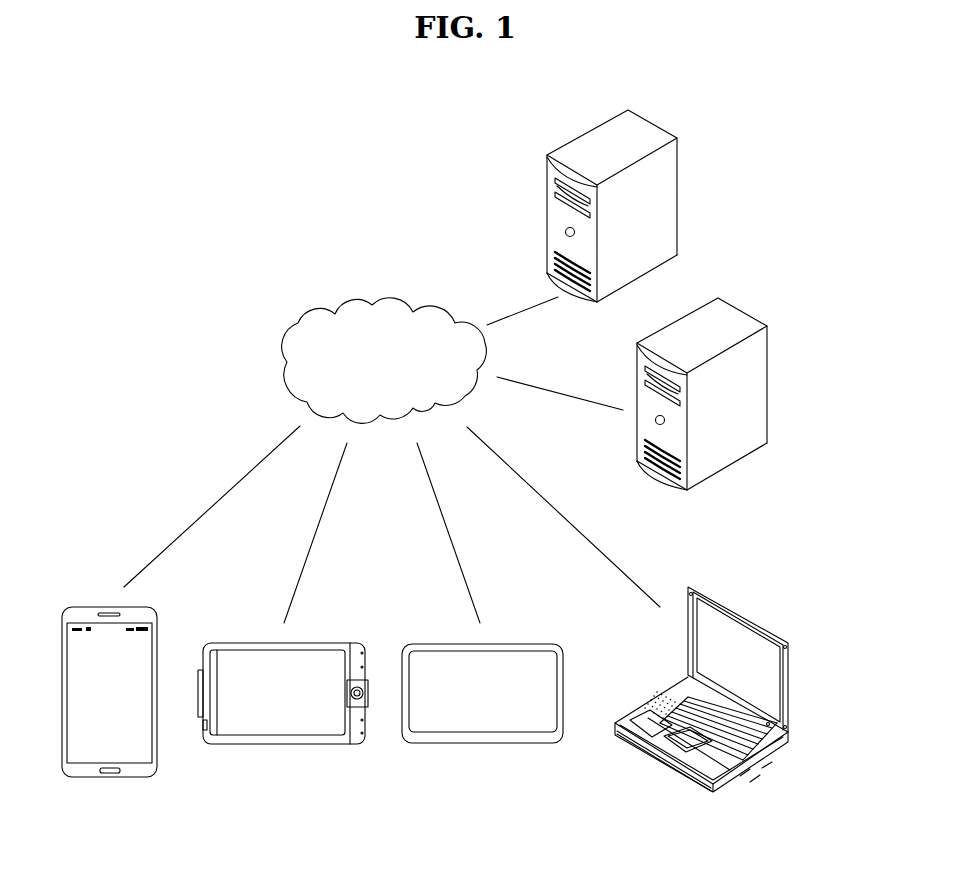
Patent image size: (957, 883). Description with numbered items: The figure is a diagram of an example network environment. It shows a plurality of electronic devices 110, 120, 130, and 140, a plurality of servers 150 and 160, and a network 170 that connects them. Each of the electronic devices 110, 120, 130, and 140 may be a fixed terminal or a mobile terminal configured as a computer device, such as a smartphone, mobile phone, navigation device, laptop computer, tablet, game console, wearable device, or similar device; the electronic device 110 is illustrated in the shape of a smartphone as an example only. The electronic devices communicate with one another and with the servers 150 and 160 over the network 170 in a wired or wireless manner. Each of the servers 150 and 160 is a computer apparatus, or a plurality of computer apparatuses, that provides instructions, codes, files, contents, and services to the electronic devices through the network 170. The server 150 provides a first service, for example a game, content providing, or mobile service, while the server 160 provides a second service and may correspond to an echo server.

The electronic device 110 is at (110, 778).
The electronic device 120 is at (283, 745).
The electronic device 130 is at (483, 745).
The electronic device 140 is at (788, 688).
The server 150 is at (766, 383).
The server 160 is at (677, 197).
The network 170 is at (387, 296).